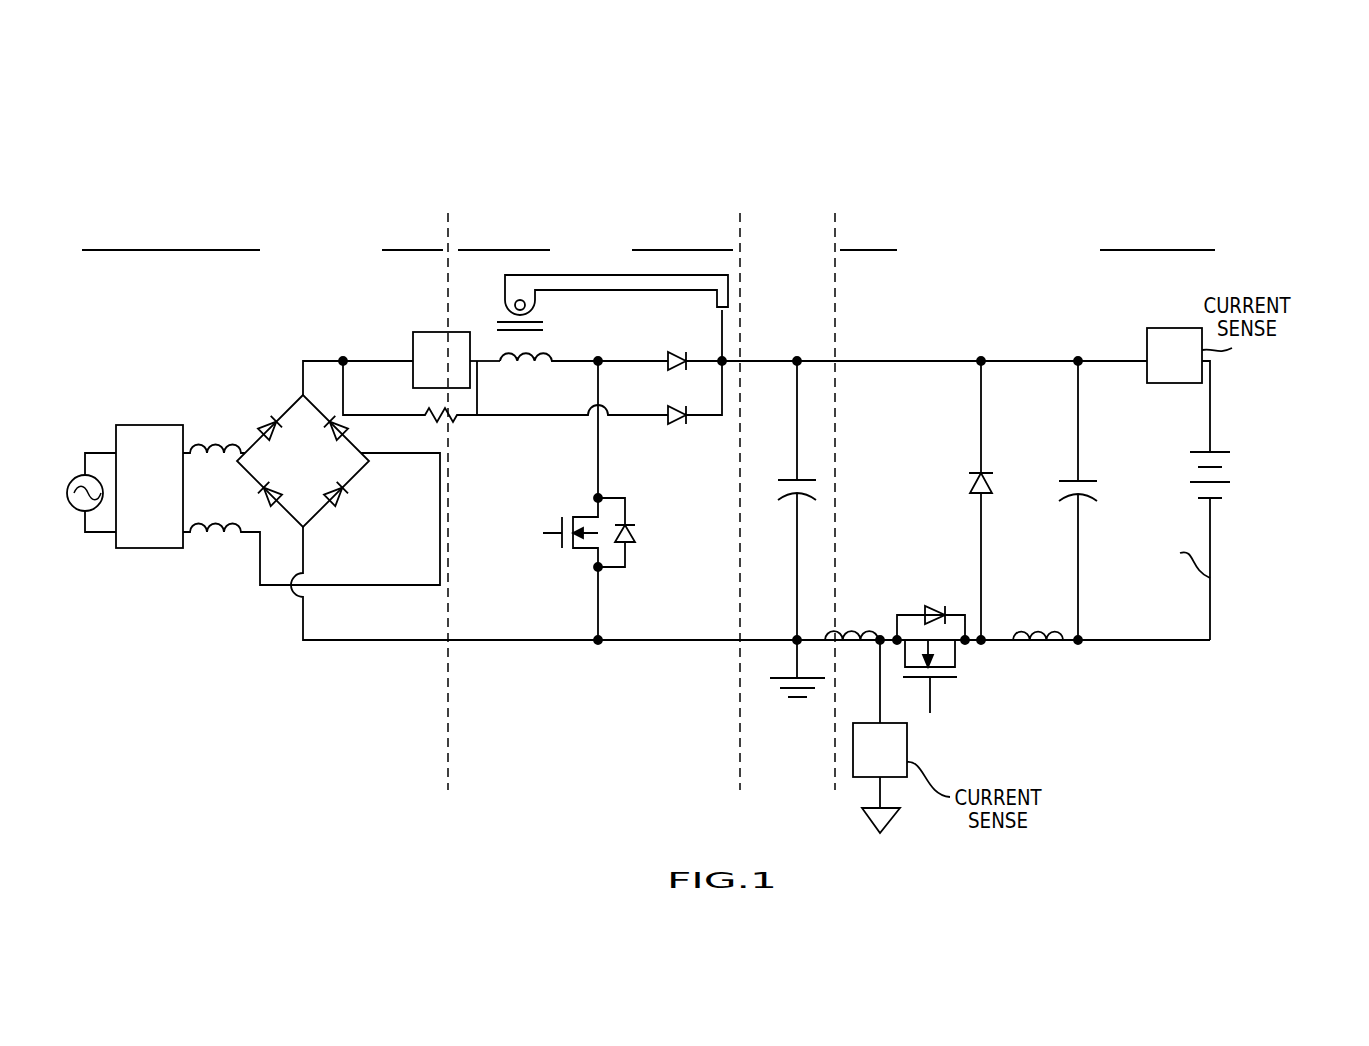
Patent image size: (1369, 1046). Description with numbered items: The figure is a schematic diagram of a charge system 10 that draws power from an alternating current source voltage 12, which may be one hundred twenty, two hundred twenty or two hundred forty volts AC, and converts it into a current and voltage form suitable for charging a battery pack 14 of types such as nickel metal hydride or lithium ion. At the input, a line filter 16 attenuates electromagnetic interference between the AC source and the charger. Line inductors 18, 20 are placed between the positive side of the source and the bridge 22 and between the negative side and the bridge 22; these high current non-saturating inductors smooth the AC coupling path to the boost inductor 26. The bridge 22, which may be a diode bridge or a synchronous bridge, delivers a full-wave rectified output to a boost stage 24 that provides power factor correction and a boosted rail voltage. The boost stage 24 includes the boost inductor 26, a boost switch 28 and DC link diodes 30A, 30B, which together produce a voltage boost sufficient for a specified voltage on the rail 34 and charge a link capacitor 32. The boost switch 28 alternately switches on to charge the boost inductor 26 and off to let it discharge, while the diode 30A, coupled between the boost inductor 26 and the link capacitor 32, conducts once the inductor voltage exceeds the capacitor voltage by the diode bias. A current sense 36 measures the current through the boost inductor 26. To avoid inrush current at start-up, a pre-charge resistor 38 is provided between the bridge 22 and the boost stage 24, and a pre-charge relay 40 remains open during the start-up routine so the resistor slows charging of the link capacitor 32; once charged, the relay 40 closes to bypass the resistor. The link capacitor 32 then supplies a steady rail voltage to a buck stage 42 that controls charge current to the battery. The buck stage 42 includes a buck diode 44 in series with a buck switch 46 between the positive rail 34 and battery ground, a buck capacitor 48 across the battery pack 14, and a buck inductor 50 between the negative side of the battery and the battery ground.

The charge system 10 is at (150, 148).
The alternating current source voltage 12 is at (87, 547).
The battery pack 14 is at (1240, 458).
The line filter 16 is at (150, 425).
The line inductor 18 is at (227, 446).
The line inductor 20 is at (227, 525).
The bridge 22 is at (257, 387).
The boost stage 24 is at (595, 245).
The boost inductor 26 is at (506, 352).
The boost switch 28 is at (578, 567).
The DC link diode 30A is at (668, 368).
The DC link diode 30B is at (686, 412).
The link capacitor 32 is at (786, 474).
The rail 34 is at (889, 360).
The current sense 36 is at (506, 290).
The pre-charge resistor 38 is at (452, 418).
The pre-charge relay 40 is at (413, 340).
The buck stage 42 is at (1027, 262).
The buck diode 44 is at (965, 481).
The buck switch 46 is at (919, 607).
The buck capacitor 48 is at (1050, 485).
The buck inductor 50 is at (1040, 646).